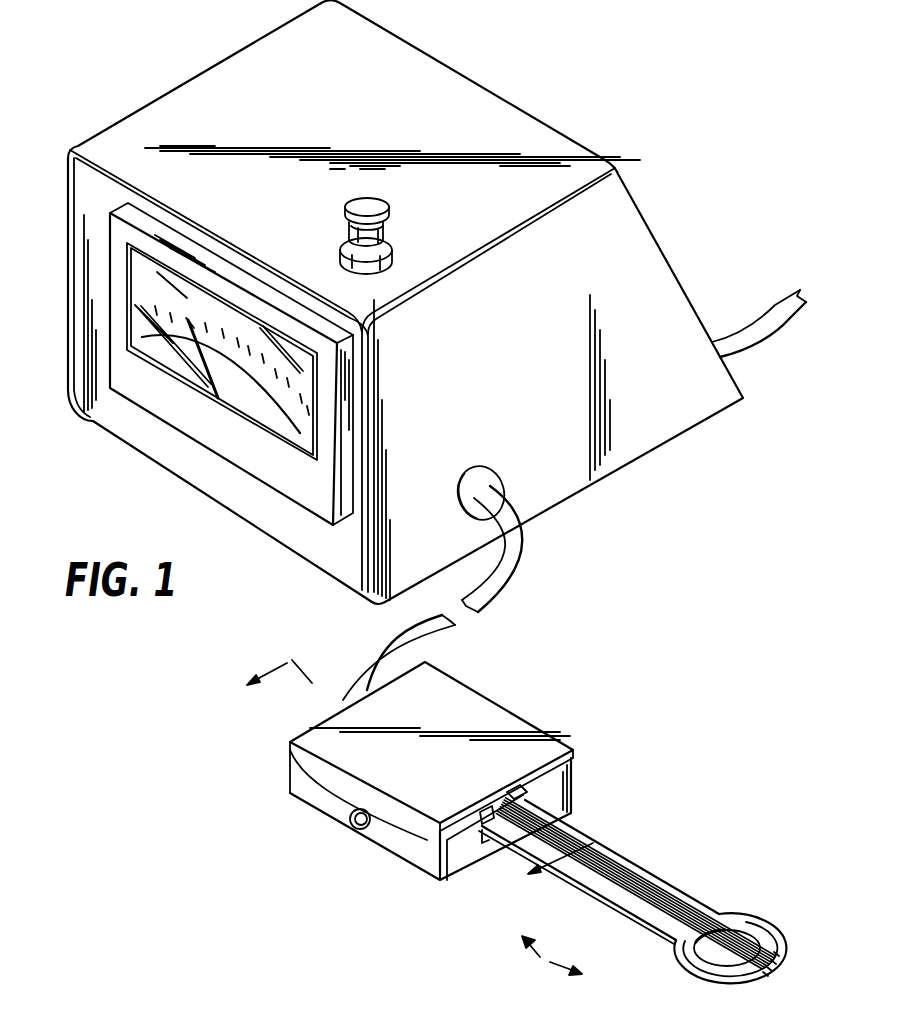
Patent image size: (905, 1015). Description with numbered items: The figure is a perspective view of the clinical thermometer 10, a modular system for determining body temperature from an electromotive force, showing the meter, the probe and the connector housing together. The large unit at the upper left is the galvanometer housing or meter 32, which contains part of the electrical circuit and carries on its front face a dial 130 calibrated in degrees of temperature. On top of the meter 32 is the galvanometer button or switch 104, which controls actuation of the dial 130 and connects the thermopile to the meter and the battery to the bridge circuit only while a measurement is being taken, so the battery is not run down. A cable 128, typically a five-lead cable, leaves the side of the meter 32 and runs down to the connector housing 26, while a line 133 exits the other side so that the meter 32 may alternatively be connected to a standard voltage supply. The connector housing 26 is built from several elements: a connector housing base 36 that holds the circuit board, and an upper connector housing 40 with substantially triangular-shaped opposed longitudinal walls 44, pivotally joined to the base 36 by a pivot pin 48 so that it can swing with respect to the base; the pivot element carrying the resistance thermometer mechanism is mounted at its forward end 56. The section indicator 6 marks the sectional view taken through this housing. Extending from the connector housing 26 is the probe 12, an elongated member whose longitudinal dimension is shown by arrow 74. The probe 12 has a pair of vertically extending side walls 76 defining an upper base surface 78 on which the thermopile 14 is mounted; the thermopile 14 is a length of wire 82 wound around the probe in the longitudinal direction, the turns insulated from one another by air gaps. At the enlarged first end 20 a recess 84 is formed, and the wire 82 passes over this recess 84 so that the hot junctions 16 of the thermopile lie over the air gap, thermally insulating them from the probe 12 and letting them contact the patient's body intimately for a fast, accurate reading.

The clinical thermometer 10 is at (676, 566).
The probe 12 is at (660, 870).
The thermopile 14 is at (620, 862).
The hot junctions 16 is at (750, 937).
The first end 20 is at (782, 957).
The connector housing 26 is at (500, 706).
The galvanometer housing 32 is at (493, 110).
The connector housing base 36 is at (393, 853).
The upper connector housing 40 is at (308, 757).
The opposed longitudinal walls 44 is at (333, 790).
The pivot pin 48 is at (355, 826).
The forward end 56 is at (563, 762).
The section line 6- 6 is at (408, 776).
The arrow 74 is at (547, 963).
The side walls 76 is at (700, 902).
The upper base surfaces 78 is at (527, 837).
The wire 82 is at (672, 920).
The recess 84 is at (717, 962).
The galvanometer button or switch 104 is at (378, 210).
The cable 128 is at (527, 547).
The dial 130 is at (187, 377).
The line 133 is at (780, 307).